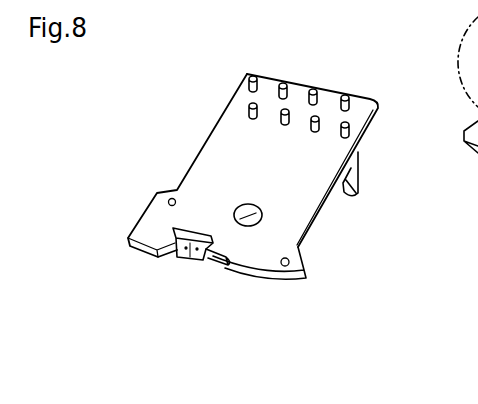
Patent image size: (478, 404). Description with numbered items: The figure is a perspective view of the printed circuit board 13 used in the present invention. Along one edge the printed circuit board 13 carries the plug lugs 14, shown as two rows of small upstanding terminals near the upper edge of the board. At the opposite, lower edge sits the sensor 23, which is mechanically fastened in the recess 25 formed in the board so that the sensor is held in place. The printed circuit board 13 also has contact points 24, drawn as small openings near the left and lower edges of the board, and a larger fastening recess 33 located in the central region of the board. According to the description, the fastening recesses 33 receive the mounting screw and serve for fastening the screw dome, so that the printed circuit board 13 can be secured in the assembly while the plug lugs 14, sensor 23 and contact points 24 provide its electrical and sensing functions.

The printed circuit board 13 is at (311, 236).
The plug lugs 14 is at (362, 196).
The sensor 23 is at (192, 250).
The contact points 24 is at (168, 202).
The recess 25 is at (216, 252).
The fastening recesses 33 is at (248, 217).